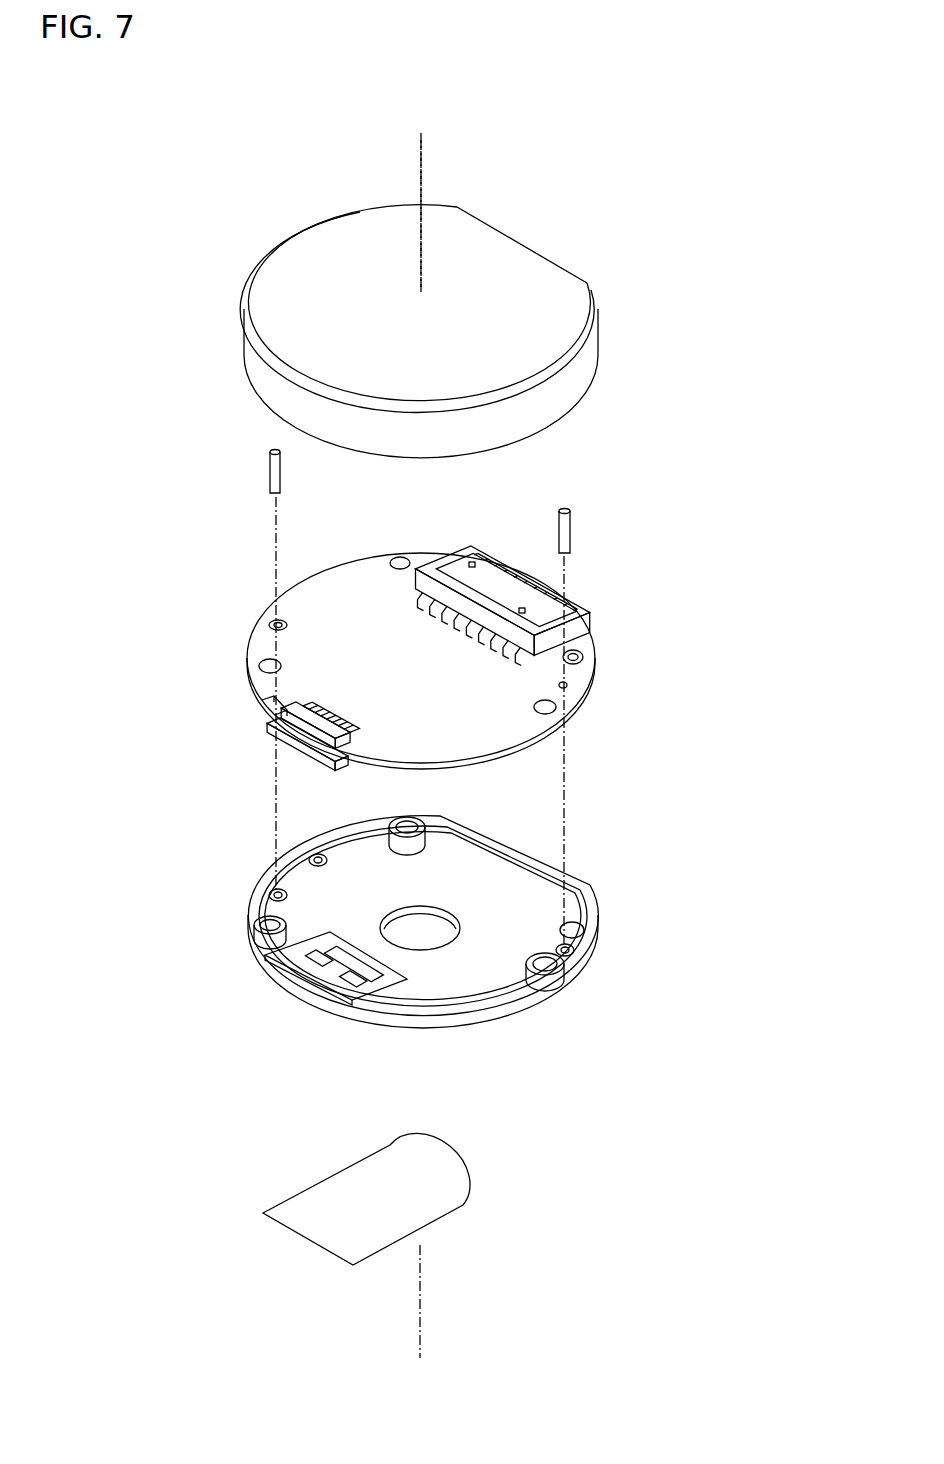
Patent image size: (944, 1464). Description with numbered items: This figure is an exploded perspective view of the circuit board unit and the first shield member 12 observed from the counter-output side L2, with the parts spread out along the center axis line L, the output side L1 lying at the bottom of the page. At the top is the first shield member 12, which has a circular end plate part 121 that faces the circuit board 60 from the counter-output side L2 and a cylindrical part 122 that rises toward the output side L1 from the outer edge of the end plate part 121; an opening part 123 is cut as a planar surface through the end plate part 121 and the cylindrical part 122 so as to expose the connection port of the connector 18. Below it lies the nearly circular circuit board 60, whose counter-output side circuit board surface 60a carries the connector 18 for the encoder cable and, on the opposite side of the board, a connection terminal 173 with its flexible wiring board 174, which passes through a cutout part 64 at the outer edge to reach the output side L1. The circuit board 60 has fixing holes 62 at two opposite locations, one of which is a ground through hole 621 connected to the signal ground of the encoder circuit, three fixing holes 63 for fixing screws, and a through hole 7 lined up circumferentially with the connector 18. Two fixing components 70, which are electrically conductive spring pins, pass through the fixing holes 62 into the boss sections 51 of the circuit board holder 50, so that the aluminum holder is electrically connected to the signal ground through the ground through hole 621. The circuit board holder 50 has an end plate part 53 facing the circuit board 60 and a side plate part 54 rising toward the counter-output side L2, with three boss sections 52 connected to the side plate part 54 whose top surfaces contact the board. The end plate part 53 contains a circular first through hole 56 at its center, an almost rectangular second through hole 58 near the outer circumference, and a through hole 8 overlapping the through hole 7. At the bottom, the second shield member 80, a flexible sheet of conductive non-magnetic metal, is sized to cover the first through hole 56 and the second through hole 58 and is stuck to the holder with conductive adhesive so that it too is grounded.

The first shield member 12 is at (412, 328).
The end plate part 121 is at (552, 298).
The cylindrical part 122 is at (597, 352).
The opening part 123 is at (535, 247).
The fixing component 70 is at (268, 472).
The circuit board 60 is at (399, 643).
The counter-output side circuit board surface 60a is at (470, 701).
The fixing holes 63 is at (398, 556).
The ground through hole 621 is at (275, 619).
The fixing holes 62 is at (567, 685).
The through hole 7 is at (585, 657).
The connector 18 is at (434, 558).
The connection terminal 173 is at (336, 696).
The flexible wiring board 174 is at (302, 740).
The cutout part 64 is at (278, 714).
The circuit board holder 50 is at (398, 930).
The boss sections 51 is at (280, 888).
The boss sections 52 is at (397, 815).
The end plate part 53 is at (430, 992).
The side plate part 54 is at (478, 1020).
The first through hole 56 is at (413, 906).
The second through hole 58 is at (325, 975).
The through hole 8 is at (578, 918).
The second shield member 80 is at (250, 1212).
The center axis line L is at (421, 170).
The output side L1 is at (420, 1316).
The counter-output side L2 is at (420, 198).